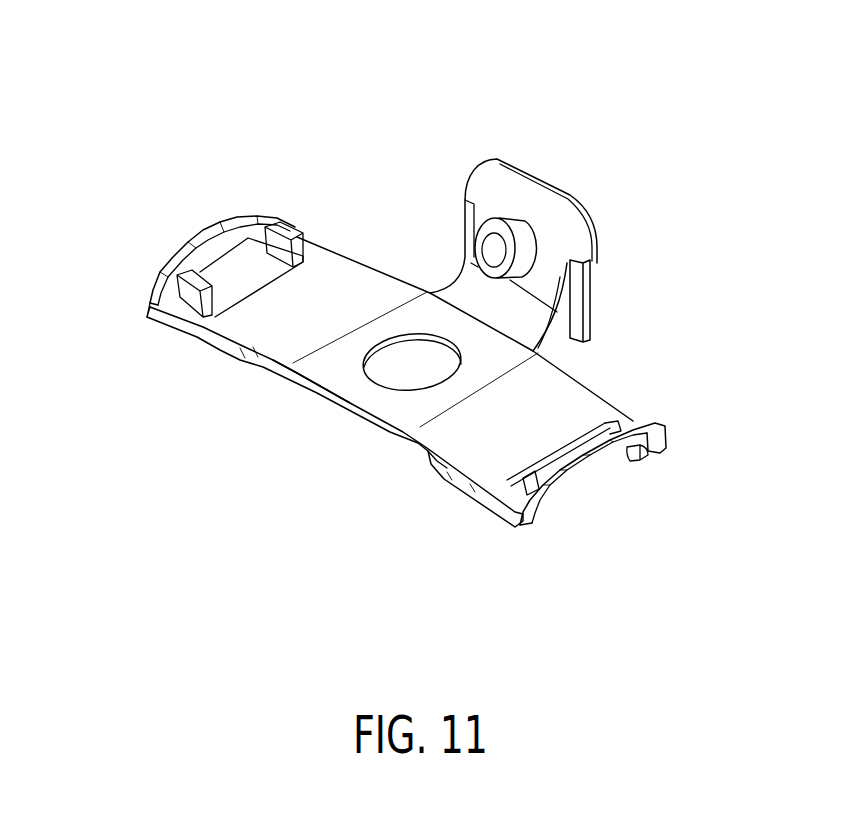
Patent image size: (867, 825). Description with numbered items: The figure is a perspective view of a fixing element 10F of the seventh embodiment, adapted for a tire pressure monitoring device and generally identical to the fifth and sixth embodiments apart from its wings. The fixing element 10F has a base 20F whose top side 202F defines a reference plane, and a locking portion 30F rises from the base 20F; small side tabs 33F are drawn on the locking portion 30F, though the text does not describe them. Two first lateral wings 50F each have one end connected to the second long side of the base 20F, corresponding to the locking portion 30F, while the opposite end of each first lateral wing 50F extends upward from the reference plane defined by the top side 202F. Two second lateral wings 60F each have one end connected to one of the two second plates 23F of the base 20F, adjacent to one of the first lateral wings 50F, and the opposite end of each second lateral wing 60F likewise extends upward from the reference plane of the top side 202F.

The fixing element 10F is at (292, 93).
The base 20F is at (330, 249).
The second plates 23F is at (568, 415).
The top side 202F is at (337, 372).
The locking portion 30F is at (535, 172).
The side tab 33F is at (465, 213).
The first lateral wings 50F is at (170, 328).
The second lateral wings 60F is at (212, 227).